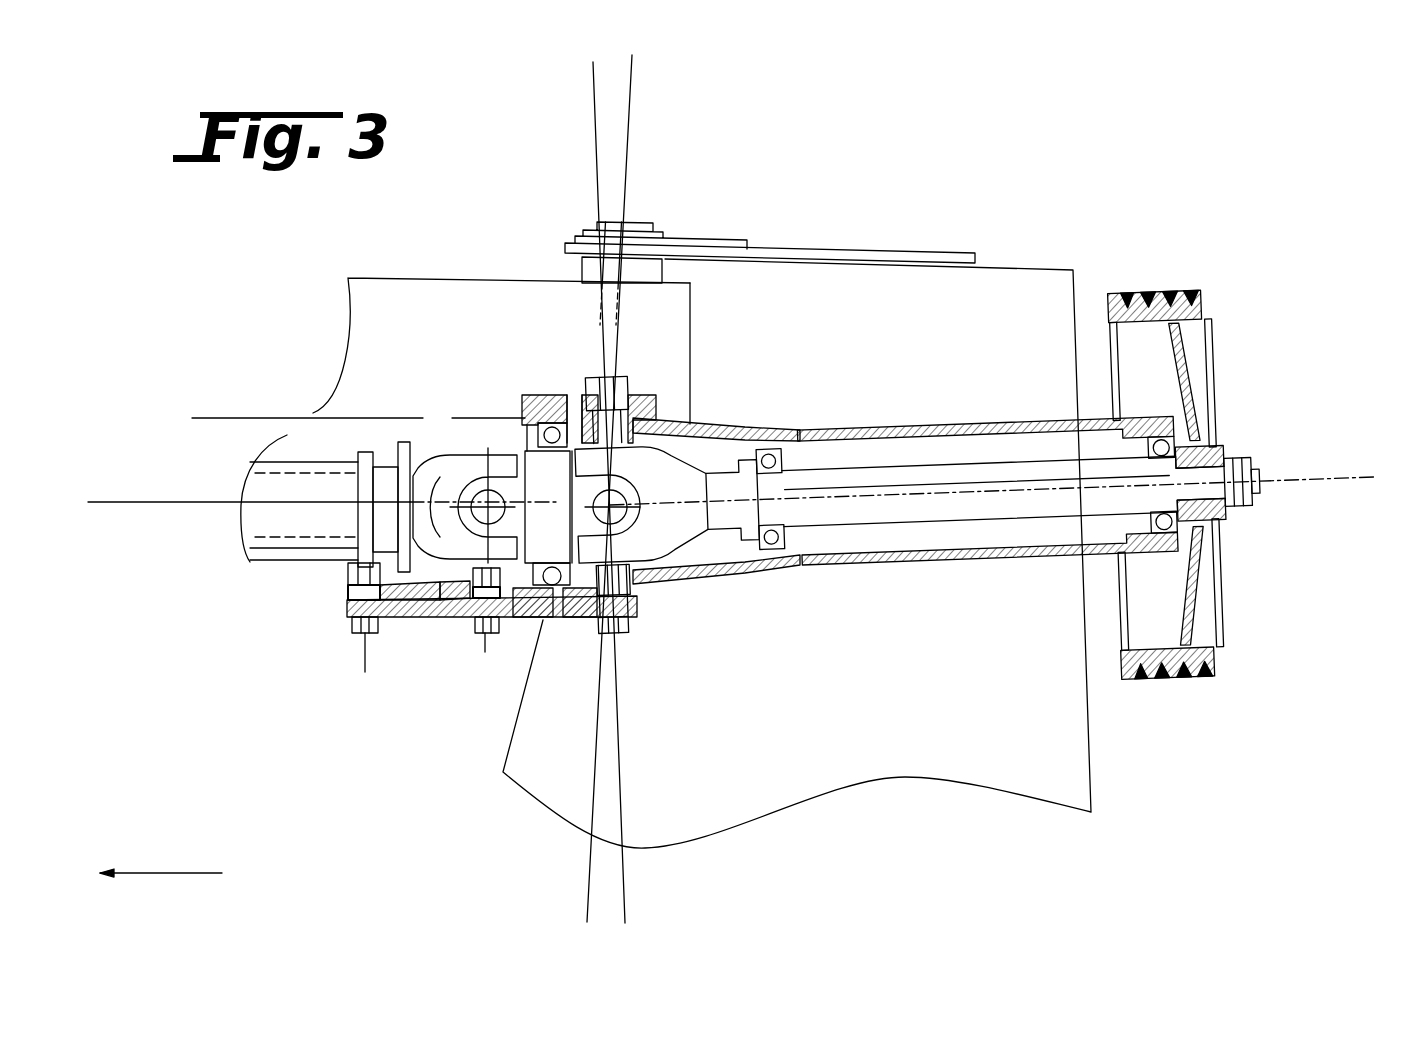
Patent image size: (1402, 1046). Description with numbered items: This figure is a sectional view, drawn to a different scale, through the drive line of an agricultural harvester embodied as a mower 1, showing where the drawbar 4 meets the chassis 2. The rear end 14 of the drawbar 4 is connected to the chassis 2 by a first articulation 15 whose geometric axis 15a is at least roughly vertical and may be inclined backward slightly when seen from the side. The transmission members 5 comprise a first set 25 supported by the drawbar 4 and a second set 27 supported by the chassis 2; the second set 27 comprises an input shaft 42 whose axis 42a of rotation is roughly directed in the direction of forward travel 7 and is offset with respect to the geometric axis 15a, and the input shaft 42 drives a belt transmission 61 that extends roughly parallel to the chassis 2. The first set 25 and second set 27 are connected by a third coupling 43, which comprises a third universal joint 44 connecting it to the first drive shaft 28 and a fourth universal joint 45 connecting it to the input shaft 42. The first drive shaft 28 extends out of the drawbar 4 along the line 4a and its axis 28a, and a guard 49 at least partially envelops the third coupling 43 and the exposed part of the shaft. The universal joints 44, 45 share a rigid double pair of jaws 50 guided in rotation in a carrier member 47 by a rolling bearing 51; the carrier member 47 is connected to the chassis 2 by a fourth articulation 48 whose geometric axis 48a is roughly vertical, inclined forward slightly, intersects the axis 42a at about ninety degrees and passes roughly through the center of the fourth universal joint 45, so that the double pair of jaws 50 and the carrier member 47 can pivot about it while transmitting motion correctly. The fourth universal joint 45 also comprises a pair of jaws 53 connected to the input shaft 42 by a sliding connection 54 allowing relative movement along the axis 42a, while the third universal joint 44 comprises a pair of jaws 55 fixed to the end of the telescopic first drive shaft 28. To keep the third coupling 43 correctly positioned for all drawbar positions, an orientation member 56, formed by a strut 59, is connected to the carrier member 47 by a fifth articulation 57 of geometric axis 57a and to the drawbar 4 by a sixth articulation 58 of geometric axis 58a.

The mower 1 is at (928, 245).
The chassis 2 is at (1043, 280).
The drawbar 4 is at (380, 289).
The plate reference line 4a is at (228, 418).
The transmission members 5 is at (286, 545).
The direction of forward travel 7 is at (165, 873).
The rear end 14 is at (700, 312).
The first articulation 15 is at (642, 268).
The geometric axis 15a is at (632, 84).
The first set 25 is at (305, 452).
The second set 27 is at (961, 452).
The first drive shaft 28 is at (252, 523).
The shaft axis 28a is at (160, 503).
The input shaft 42 is at (876, 478).
The axis of rotation 42a is at (970, 490).
The third coupling 43 is at (539, 386).
The third universal joint 44 is at (441, 446).
The fourth universal joint 45 is at (667, 444).
The carrier member 47 is at (420, 608).
The fourth articulation 48 is at (638, 606).
The geometric axis 48a is at (620, 792).
The guard 49 is at (385, 452).
The rigid double pair of jaws 50 is at (553, 517).
The rolling bearing 51 is at (556, 582).
The pair of jaws 53 is at (707, 533).
The sliding connection 54 is at (712, 471).
The pair of jaws 55 is at (473, 460).
The orientation member 56 is at (418, 598).
The fifth articulation 57 is at (362, 625).
The geometric axis 57a is at (364, 653).
The sixth articulation 58 is at (487, 560).
The geometric axis 58a is at (485, 652).
The strut 59 is at (447, 600).
The belt transmission 61 is at (1212, 296).